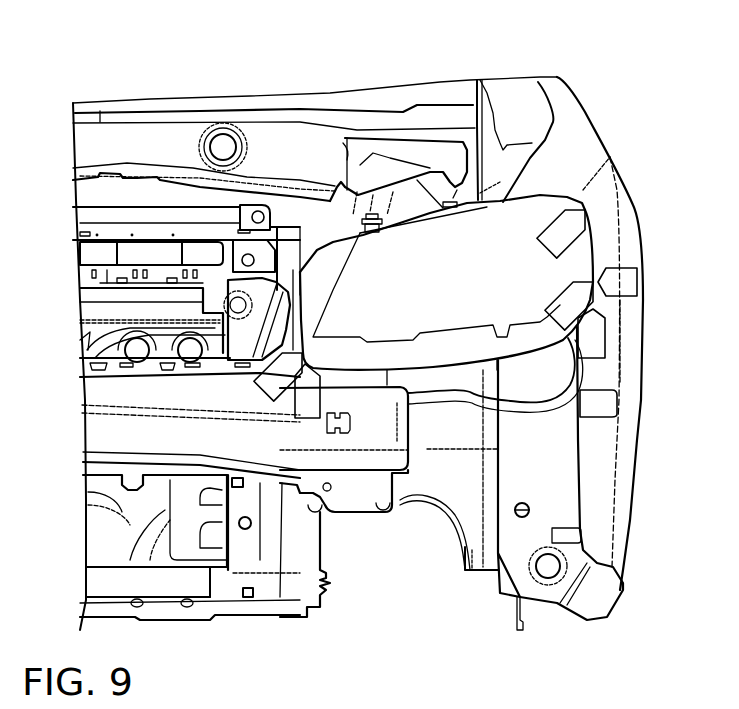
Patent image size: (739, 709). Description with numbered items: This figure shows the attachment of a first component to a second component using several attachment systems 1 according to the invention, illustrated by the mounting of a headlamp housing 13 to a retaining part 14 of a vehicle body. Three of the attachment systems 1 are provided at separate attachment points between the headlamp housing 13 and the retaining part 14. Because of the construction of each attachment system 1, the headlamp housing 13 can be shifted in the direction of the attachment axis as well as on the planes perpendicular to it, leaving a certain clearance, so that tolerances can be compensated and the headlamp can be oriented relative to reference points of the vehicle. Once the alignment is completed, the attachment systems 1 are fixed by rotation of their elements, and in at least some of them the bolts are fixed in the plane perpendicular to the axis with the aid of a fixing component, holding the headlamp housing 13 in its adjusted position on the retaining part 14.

The attachment system 1 is at (302, 353).
The headlamp housing 13 is at (497, 243).
The retaining part 14 is at (282, 335).